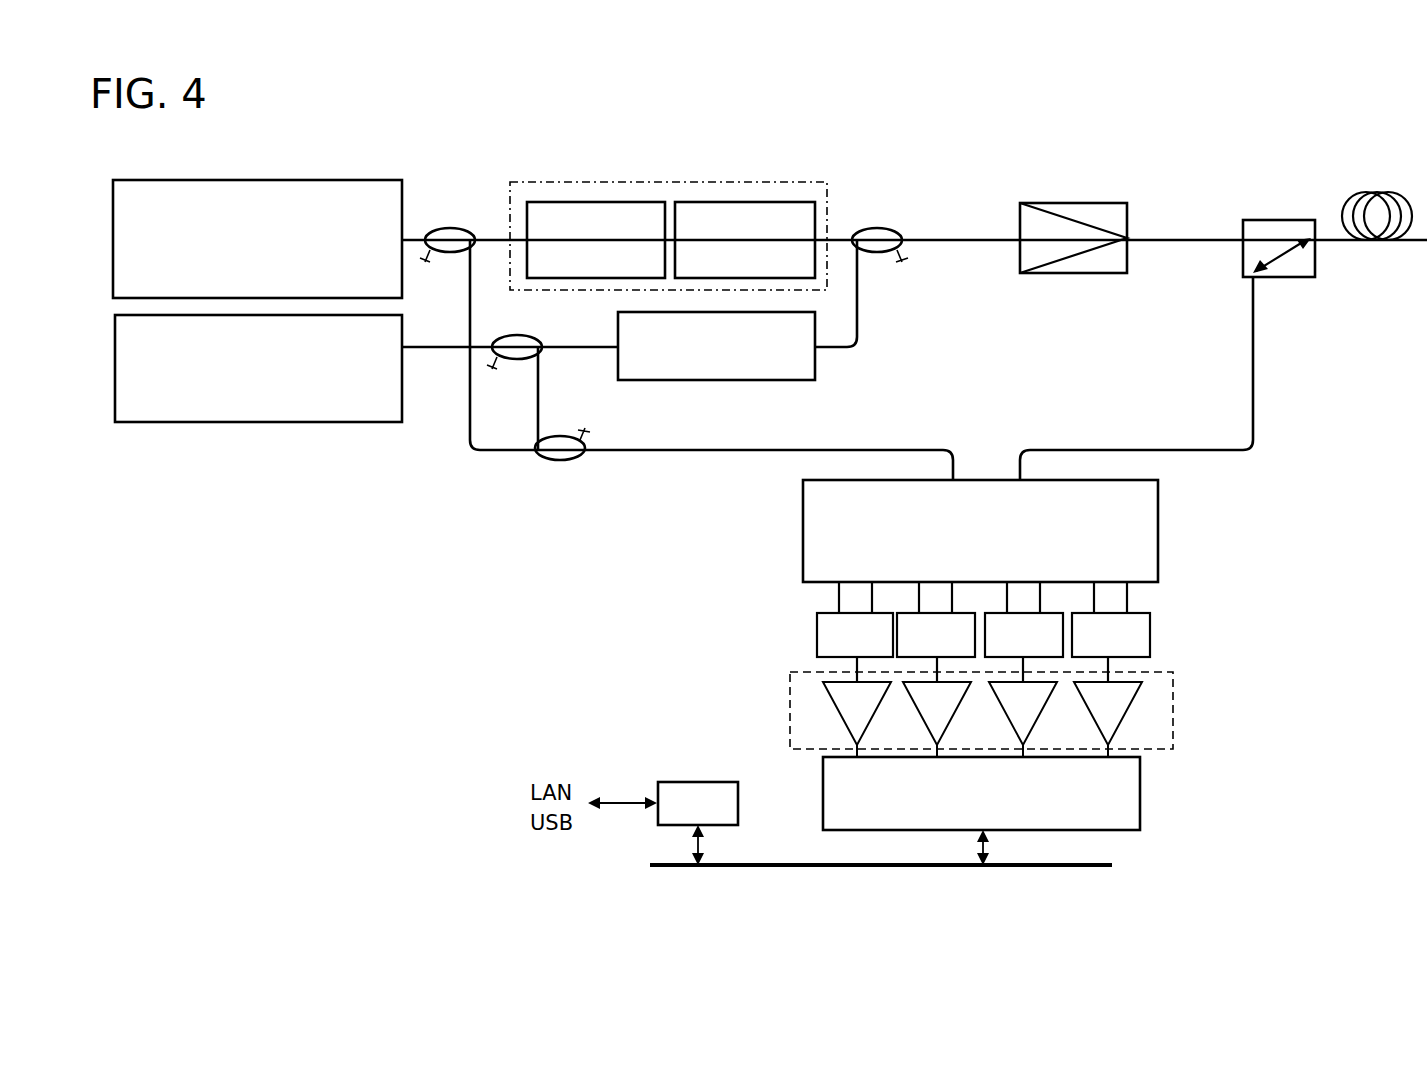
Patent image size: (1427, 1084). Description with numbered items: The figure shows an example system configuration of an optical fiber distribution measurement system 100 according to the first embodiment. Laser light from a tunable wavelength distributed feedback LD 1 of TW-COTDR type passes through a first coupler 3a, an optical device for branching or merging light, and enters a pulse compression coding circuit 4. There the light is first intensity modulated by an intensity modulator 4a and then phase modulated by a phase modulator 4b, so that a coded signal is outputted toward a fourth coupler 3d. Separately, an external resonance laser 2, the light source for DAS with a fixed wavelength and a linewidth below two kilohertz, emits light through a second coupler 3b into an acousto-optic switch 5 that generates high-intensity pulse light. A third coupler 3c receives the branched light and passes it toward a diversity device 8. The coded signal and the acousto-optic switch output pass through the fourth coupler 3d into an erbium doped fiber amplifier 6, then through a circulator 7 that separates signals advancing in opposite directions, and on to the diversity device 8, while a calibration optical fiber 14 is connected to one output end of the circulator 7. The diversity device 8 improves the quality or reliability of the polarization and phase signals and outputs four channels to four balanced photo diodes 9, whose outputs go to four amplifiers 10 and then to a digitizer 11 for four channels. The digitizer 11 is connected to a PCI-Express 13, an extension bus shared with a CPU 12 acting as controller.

The tunable wavelength distributed feedback LD 1 is at (268, 180).
The external resonance laser 2 is at (255, 422).
The first coupler 3a is at (450, 228).
The second coupler 3b is at (535, 336).
The third coupler 3c is at (560, 460).
The fourth coupler 3d is at (877, 228).
The pulse compression coding circuit 4 is at (668, 184).
The intensity modulator 4a is at (562, 202).
The phase modulator 4b is at (760, 202).
The acousto-optic switch 5 is at (765, 380).
The erbium doped fiber amplifier 6 is at (1085, 203).
The circulator 7 is at (1270, 220).
The diversity device 8 is at (1158, 540).
The balanced photo diodes 9 is at (1150, 625).
The amplifiers 10 is at (790, 716).
The digitizer 11 is at (1140, 795).
The CPU 12 is at (685, 781).
The PCI-Express 13 is at (1055, 868).
The calibration optical fiber 14 is at (1378, 192).
The optical fiber distribution measurement system 100 is at (1328, 600).